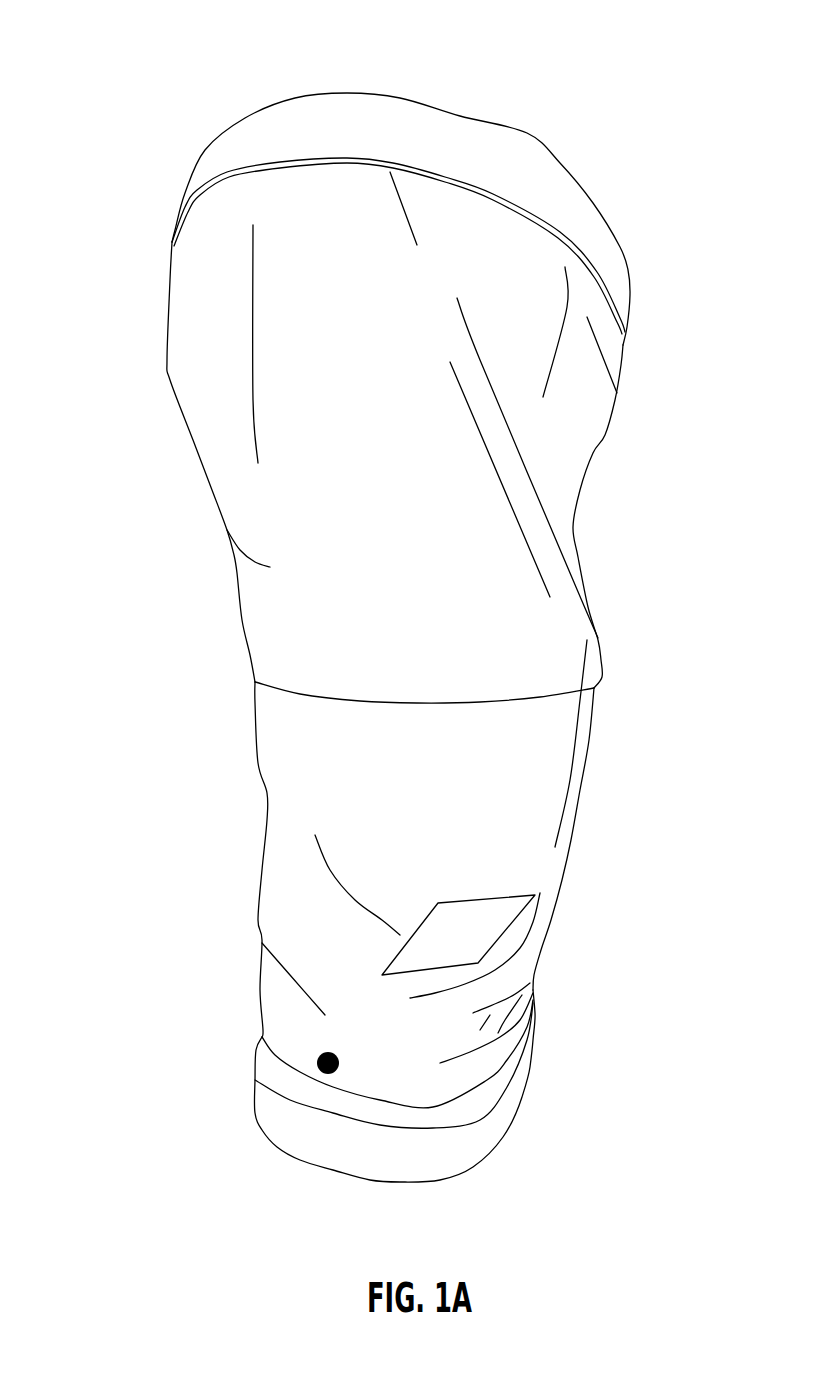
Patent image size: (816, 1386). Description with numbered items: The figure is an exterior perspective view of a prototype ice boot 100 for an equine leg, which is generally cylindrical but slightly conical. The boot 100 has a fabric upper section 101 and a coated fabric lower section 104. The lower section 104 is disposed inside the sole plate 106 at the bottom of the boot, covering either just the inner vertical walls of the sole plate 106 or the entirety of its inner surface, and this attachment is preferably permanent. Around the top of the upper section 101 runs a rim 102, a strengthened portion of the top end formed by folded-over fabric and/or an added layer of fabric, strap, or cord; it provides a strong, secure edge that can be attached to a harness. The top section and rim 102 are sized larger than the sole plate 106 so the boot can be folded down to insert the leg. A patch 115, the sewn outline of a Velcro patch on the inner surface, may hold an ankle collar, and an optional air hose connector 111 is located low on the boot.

The boot 100 is at (108, 87).
The fabric upper section 101 is at (570, 503).
The rim 102 is at (483, 142).
The coated fabric lower section 104 is at (515, 855).
The sole plate 106 is at (270, 1142).
The air hose connector 111 is at (353, 1065).
The patch 115 is at (458, 935).